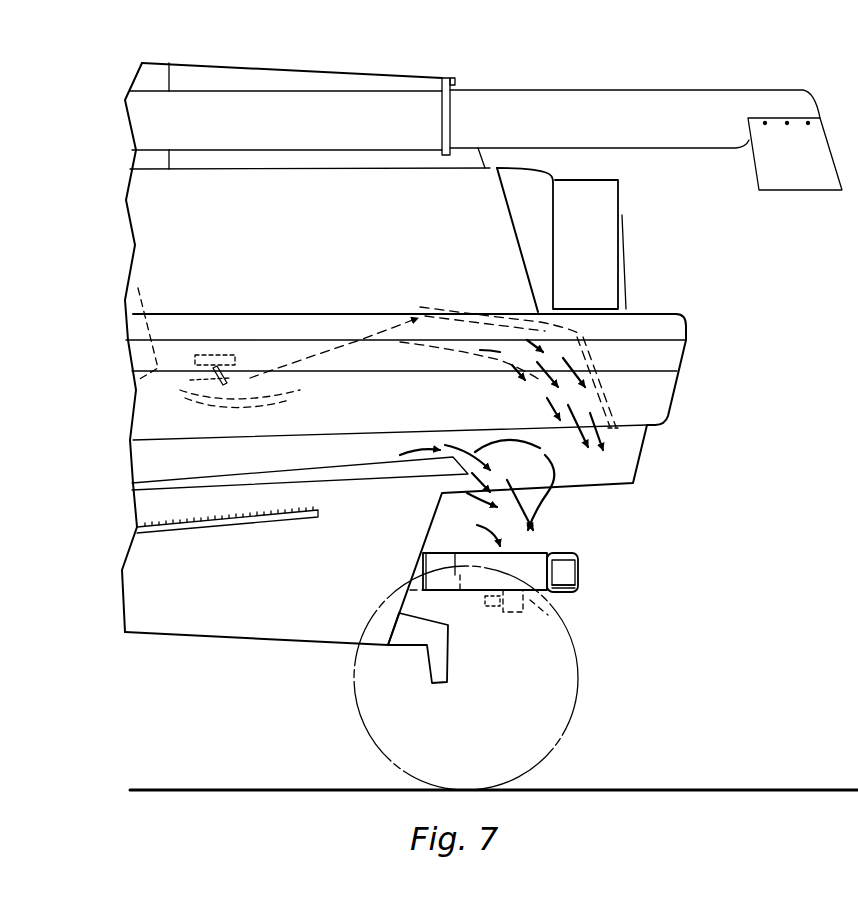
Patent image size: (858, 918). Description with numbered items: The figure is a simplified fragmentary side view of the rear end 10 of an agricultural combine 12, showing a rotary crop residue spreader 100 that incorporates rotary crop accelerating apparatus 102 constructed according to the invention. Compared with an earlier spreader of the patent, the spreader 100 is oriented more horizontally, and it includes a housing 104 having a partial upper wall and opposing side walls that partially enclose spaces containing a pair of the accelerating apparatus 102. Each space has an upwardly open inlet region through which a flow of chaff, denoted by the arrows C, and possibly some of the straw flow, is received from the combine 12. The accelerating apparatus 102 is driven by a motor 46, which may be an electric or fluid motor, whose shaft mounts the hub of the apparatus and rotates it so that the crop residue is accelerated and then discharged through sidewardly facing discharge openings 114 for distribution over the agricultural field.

The rear end 10 is at (685, 316).
The agricultural combine 12 is at (72, 666).
The motor 46 is at (517, 612).
The rotary crop residue spreader 100 is at (624, 571).
The rotary crop accelerating apparatus 102 is at (580, 568).
The housing 104 is at (470, 555).
The discharge openings 114 is at (560, 568).